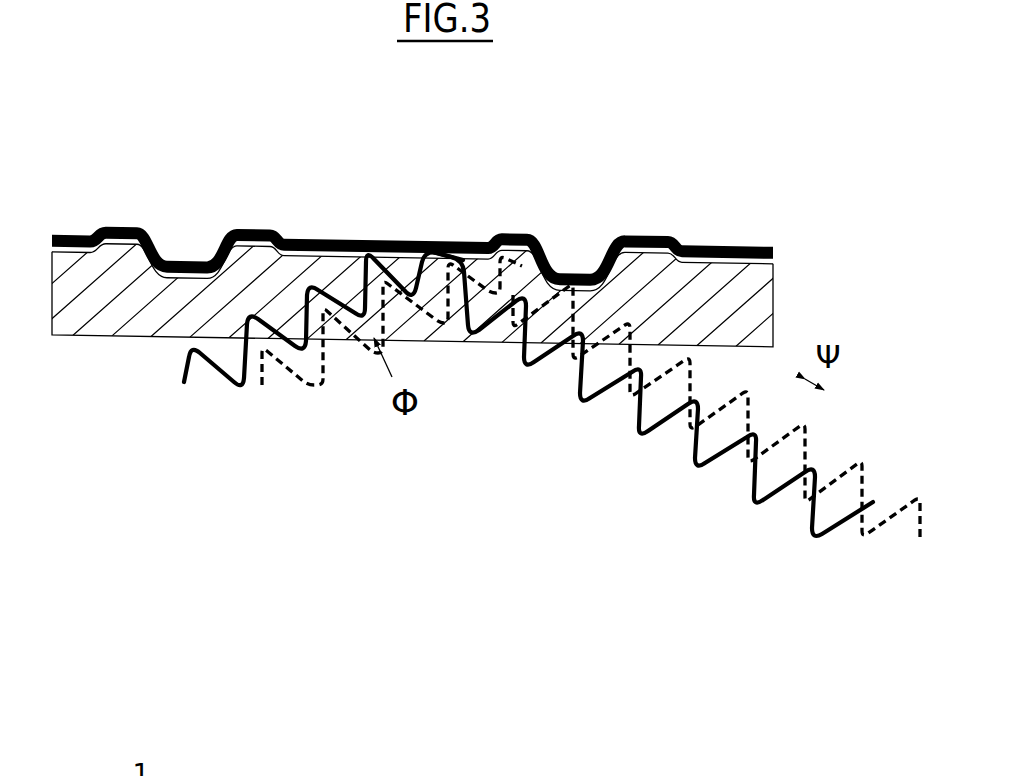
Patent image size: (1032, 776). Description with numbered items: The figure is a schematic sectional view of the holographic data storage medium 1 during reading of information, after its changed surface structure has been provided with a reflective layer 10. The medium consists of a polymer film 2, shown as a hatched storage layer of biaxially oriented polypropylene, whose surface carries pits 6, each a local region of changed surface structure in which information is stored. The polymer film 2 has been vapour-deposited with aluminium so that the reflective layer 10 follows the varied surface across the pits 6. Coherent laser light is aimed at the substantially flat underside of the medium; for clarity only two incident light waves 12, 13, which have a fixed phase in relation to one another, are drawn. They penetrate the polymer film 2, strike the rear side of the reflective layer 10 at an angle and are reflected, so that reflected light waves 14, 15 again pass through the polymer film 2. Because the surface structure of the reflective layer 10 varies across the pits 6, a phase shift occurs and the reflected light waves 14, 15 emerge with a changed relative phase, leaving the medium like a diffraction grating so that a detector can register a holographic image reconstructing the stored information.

The holographic data storage medium 1 is at (343, 415).
The polymer film 2 is at (760, 280).
The pit 6 is at (188, 256).
The reflective layer 10 is at (318, 236).
The incident light wave 12 is at (183, 372).
The incident light wave 13 is at (302, 384).
The reflected light wave 14 is at (589, 408).
The reflected light wave 15 is at (873, 470).